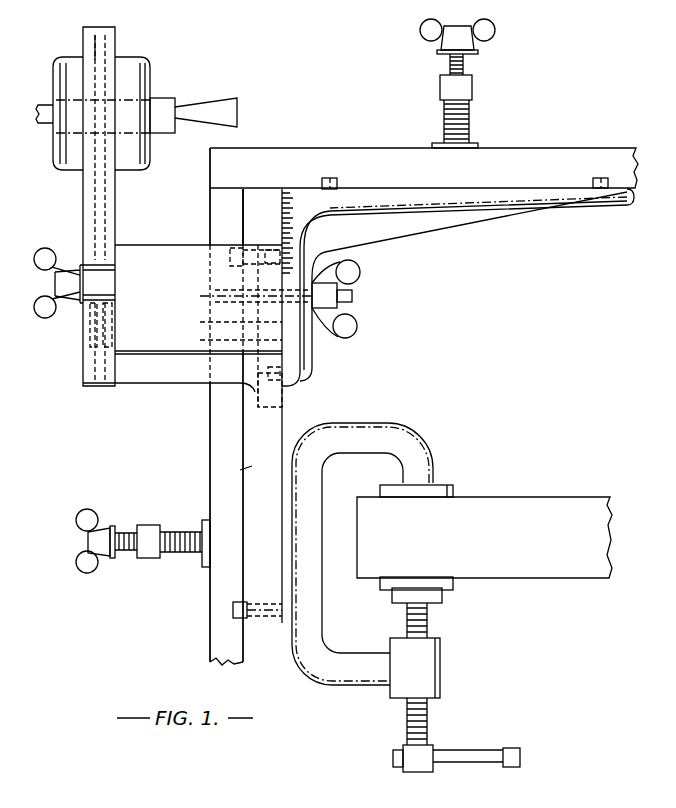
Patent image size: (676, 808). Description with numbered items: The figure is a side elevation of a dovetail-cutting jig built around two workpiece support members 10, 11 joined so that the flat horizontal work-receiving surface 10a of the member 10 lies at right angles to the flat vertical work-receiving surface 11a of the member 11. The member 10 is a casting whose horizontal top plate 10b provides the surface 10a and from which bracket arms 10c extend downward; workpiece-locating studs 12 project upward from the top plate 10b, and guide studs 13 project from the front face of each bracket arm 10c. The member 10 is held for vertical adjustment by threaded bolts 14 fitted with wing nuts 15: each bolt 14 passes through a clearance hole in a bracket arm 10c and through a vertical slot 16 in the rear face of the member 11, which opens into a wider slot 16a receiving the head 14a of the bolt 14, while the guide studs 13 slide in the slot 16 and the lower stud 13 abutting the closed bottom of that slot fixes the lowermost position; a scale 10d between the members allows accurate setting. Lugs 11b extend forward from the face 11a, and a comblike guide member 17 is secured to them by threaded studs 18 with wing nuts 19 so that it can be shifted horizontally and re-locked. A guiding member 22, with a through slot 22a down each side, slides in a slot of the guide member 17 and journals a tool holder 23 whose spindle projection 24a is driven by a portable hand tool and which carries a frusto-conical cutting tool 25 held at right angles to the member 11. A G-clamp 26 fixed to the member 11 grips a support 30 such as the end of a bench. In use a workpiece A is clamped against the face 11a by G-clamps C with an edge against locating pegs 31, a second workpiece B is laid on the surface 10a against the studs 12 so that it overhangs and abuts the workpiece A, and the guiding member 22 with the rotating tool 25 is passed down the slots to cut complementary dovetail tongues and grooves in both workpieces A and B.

The workpiece support member 10 is at (282, 216).
The work-receiving surface 10a is at (495, 199).
The top plate 10b is at (456, 238).
The bracket arms 10c is at (291, 352).
The scale 10d is at (288, 222).
The workpiece support member 11 is at (248, 415).
The work-receiving surface 11a is at (245, 479).
The lugs 11b is at (128, 265).
The workpiece-locating studs 12 is at (330, 178).
The guide studs 13 is at (270, 252).
The threaded bolt 14 is at (352, 296).
The head 14a is at (215, 295).
The wing nut 15 is at (350, 272).
The vertical slot 16 is at (200, 322).
The wider slot 16a is at (200, 340).
The guide member 17 is at (83, 203).
The threaded stud 18 is at (45, 310).
The wing nut 19 is at (45, 258).
The guiding member 22 is at (125, 72).
The through slot 22a is at (129, 96).
The tool holder 23 is at (164, 125).
The projection 24a is at (47, 113).
The cutting tool 25 is at (217, 107).
The G-clamp 26 is at (410, 445).
The support 30 is at (515, 525).
The locating pegs 31 is at (230, 258).
The workpiece A is at (225, 458).
The workpiece B is at (390, 170).
The G-clamps C is at (455, 93).